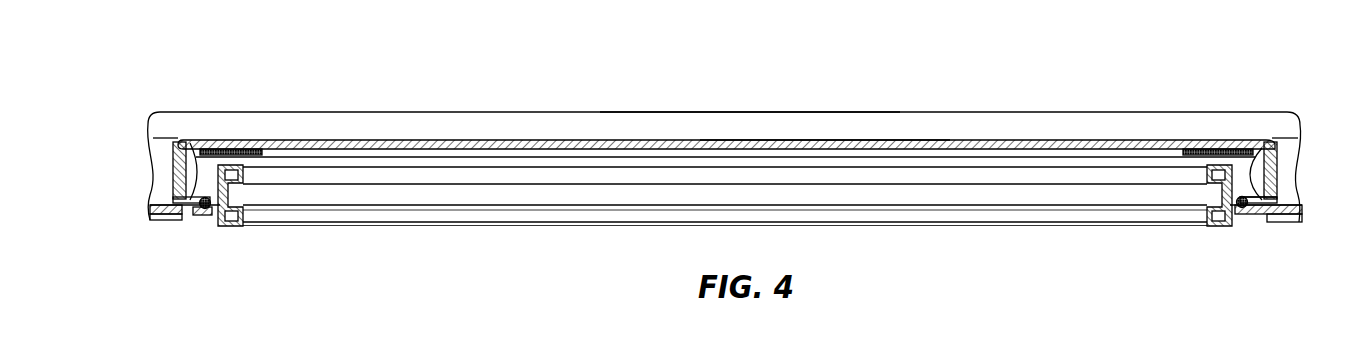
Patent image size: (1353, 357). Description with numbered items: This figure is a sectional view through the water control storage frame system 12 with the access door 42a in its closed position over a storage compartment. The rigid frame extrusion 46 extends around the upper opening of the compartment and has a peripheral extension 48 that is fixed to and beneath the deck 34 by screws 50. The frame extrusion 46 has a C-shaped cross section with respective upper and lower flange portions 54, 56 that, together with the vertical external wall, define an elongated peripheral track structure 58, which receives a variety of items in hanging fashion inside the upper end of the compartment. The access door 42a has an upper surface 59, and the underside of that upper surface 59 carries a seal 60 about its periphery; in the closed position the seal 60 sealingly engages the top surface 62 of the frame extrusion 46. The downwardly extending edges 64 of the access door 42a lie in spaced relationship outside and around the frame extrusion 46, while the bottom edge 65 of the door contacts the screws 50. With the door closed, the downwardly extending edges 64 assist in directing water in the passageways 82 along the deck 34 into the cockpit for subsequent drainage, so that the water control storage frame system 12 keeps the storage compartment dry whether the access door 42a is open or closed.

The water control storage frame system 12 is at (217, 236).
The deck 34 is at (1285, 218).
The access door 42a is at (956, 84).
The frame extrusion 46 is at (1258, 175).
The peripheral extension 48 is at (1253, 217).
The screws 50 is at (207, 210).
The upper flange portion 54 is at (700, 177).
The lower flange portion 56 is at (912, 213).
The track structure 58 is at (458, 195).
The upper surface 59 is at (822, 143).
The seal 60 is at (213, 143).
The top surface 62 is at (315, 165).
The downwardly extending edges 64 is at (178, 168).
The bottom edge 65 is at (188, 165).
The passageways 82 is at (168, 197).